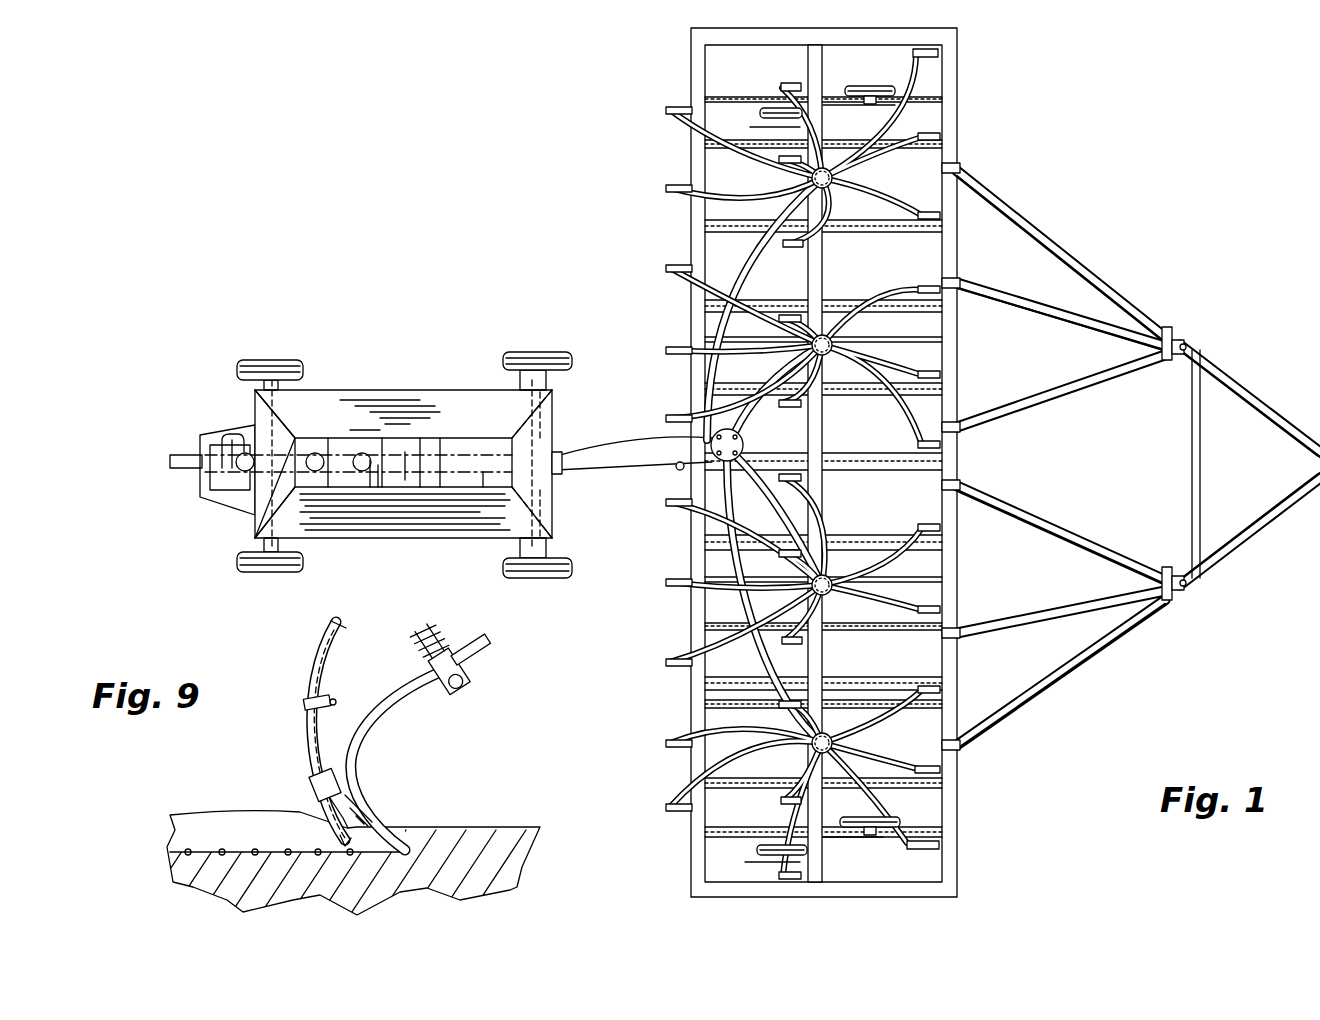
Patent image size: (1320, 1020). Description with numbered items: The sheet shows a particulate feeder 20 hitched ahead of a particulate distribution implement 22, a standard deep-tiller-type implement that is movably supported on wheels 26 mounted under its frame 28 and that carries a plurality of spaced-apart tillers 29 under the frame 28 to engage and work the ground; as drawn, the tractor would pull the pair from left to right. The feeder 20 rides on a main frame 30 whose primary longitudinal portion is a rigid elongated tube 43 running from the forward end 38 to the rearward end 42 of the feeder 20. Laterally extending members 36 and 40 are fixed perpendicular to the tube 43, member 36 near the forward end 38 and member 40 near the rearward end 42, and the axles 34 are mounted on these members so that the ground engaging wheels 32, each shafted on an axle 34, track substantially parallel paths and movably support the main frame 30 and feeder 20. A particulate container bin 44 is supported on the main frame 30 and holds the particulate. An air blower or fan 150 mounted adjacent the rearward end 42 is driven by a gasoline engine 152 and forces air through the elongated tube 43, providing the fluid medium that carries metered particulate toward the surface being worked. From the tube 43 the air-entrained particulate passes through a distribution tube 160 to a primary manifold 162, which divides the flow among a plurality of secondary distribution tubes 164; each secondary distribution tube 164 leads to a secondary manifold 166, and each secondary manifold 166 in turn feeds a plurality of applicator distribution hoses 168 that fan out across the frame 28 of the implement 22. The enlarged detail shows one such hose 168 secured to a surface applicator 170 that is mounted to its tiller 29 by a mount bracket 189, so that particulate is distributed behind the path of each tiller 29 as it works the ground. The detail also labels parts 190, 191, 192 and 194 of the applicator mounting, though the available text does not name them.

In FIG. 1, the particulate feeder 20 is at (370, 460).
In FIG. 1, the particulate distribution implement 22 is at (1116, 251).
In FIG. 1, the wheels 26 is at (768, 117).
In FIG. 1, the frame 28 is at (968, 830).
In FIG. 1, the tillers 29 is at (680, 110).
In FIG. 9, the tillers 29 is at (392, 712).
In FIG. 1, the main frame 30 is at (440, 455).
In FIG. 1, the ground engaging wheels 32 is at (265, 362).
In FIG. 1, the axle 34 is at (285, 372).
In FIG. 1, the laterally extending member 36 is at (552, 408).
In FIG. 1, the forward end 38 is at (552, 500).
In FIG. 1, the laterally extending member 40 is at (255, 404).
In FIG. 1, the rearward end 42 is at (255, 518).
In FIG. 1, the rigid elongated tube 43 is at (483, 476).
In FIG. 1, the particulate container bin 44 is at (424, 542).
In FIG. 1, the air blower or fan 150 is at (190, 470).
In FIG. 1, the gasoline engine 152 is at (210, 440).
In FIG. 1, the distribution tube 160 is at (640, 443).
In FIG. 1, the primary manifold 162 is at (740, 440).
In FIG. 1, the secondary distribution tubes 164 is at (756, 262).
In FIG. 1, the secondary manifold 166 is at (834, 175).
In FIG. 1, the applicator distribution hoses 168 is at (905, 78).
In FIG. 9, the applicator distribution hoses 168 is at (322, 636).
In FIG. 9, the surface applicator 170 is at (290, 756).
In FIG. 9, the mount bracket 189 is at (348, 800).
In FIG. 9, the bracket 190 is at (320, 812).
In FIG. 9, the clamp 191 is at (304, 705).
In FIG. 9, the bolt 192 is at (334, 700).
In FIG. 9, the rod 194 is at (312, 771).